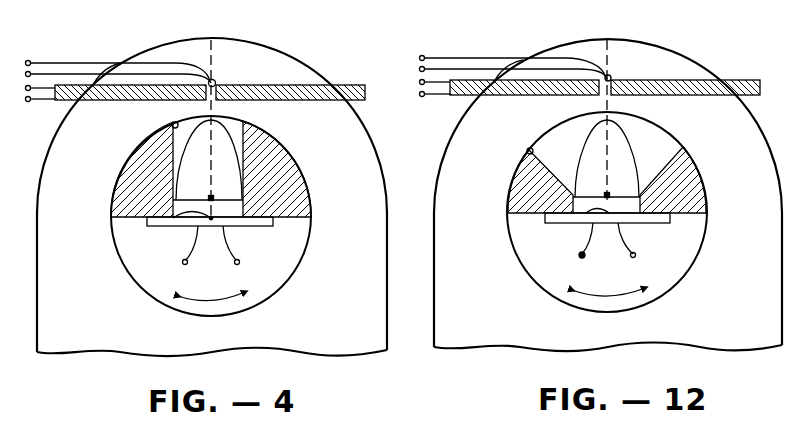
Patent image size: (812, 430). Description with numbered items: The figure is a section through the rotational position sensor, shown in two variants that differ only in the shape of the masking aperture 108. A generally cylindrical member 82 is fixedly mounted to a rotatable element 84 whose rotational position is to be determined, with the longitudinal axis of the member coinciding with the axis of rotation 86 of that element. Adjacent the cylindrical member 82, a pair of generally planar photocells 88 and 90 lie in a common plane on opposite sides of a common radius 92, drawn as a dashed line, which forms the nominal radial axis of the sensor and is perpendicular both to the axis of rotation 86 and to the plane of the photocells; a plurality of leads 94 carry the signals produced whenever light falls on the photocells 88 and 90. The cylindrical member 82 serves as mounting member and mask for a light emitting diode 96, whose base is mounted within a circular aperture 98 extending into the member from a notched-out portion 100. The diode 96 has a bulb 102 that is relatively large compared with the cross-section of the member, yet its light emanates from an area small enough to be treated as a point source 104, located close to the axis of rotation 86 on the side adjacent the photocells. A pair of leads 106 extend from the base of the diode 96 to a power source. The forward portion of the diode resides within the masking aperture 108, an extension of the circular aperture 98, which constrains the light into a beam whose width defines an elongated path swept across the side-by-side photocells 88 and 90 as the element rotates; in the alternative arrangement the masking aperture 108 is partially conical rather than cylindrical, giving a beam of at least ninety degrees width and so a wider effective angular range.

In FIG. 4, the cylindrical member 82 is at (286, 284).
In FIG. 12, the cylindrical member 82 is at (679, 282).
In FIG. 4, the rotatable element 84 is at (373, 328).
In FIG. 12, the rotatable element 84 is at (448, 305).
In FIG. 4, the axis of rotation 86 is at (172, 219).
In FIG. 12, the axis of rotation 86 is at (583, 215).
In FIG. 4, the photocell 88 is at (131, 85).
In FIG. 12, the photocell 88 is at (533, 80).
In FIG. 4, the photocell 90 is at (294, 84).
In FIG. 12, the photocell 90 is at (697, 80).
In FIG. 4, the common radius 92 is at (211, 65).
In FIG. 12, the common radius 92 is at (607, 62).
In FIG. 4, the leads 94 is at (38, 88).
In FIG. 12, the leads 94 is at (437, 82).
In FIG. 4, the light emitting diode 96 is at (246, 199).
In FIG. 12, the light emitting diode 96 is at (645, 197).
In FIG. 4, the circular aperture 98 is at (238, 210).
In FIG. 12, the circular aperture 98 is at (622, 210).
In FIG. 4, the notched-out portion 100 is at (117, 246).
In FIG. 12, the notched-out portion 100 is at (522, 243).
In FIG. 4, the bulb 102 is at (226, 128).
In FIG. 12, the bulb 102 is at (620, 126).
In FIG. 4, the point source 104 is at (212, 197).
In FIG. 12, the point source 104 is at (609, 195).
In FIG. 4, the leads 106 is at (195, 252).
In FIG. 12, the leads 106 is at (581, 253).
In FIG. 4, the masking aperture 108 is at (173, 123).
In FIG. 12, the masking aperture 108 is at (528, 150).